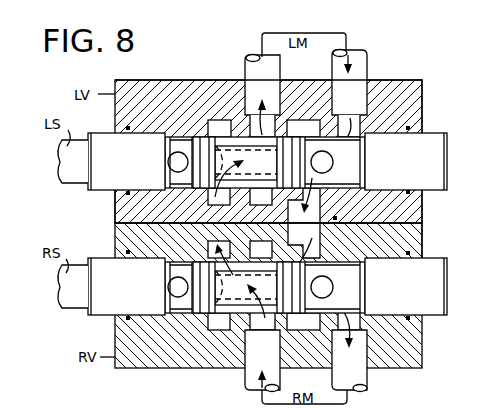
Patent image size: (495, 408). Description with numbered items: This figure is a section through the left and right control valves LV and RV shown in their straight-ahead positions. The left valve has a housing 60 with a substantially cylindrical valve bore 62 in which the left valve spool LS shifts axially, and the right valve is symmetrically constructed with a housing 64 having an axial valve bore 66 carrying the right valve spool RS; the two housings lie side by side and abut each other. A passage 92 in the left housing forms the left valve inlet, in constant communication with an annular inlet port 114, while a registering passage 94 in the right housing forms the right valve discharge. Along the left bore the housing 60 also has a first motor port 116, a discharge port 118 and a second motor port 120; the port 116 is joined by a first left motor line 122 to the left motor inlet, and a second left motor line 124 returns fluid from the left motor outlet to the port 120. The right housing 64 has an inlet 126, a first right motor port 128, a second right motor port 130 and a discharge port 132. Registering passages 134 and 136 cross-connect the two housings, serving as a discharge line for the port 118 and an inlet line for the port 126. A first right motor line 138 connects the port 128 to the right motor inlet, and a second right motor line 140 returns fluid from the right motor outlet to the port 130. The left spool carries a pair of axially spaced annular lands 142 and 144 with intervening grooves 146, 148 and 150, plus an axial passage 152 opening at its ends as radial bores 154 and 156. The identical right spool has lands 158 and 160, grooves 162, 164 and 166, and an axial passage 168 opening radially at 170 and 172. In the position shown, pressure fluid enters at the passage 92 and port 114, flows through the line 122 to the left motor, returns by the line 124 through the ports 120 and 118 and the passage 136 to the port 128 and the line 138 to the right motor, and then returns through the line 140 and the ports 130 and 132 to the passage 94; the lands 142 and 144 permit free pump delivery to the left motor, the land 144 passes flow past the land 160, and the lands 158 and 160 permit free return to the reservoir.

The left valve housing 60 is at (422, 90).
The valve bore 62 is at (420, 128).
The right valve housing 64 is at (422, 368).
The axial valve bore 66 is at (420, 258).
The left valve inlet passage 92 is at (152, 206).
The right valve discharge passage 94 is at (239, 272).
The inlet port 114 is at (215, 120).
The first motor port 116 is at (250, 196).
The discharge port 118 is at (288, 199).
The second motor port 120 is at (366, 112).
The first left motor line 122 is at (245, 68).
The second left motor line 124 is at (367, 70).
The inlet port 126 is at (285, 323).
The first right motor port 128 is at (357, 254).
The second right motor port 130 is at (276, 333).
The discharge port 132 is at (221, 330).
The registering passage 134 is at (330, 212).
The registering passage 136 is at (320, 236).
The first right motor line 138 is at (367, 381).
The second right motor line 140 is at (245, 382).
The annular land 142 is at (200, 133).
The annular land 144 is at (296, 124).
The groove 146 is at (178, 137).
The groove 148 is at (215, 135).
The groove 150 is at (350, 170).
The axial passage 152 is at (258, 178).
The radial bore 154 is at (170, 162).
The radial bore 156 is at (333, 157).
The land 158 is at (198, 313).
The land 160 is at (276, 255).
The groove 162 is at (175, 258).
The groove 164 is at (238, 244).
The groove 166 is at (352, 272).
The axial passage 168 is at (252, 290).
The radial opening 170 is at (170, 287).
The radial opening 172 is at (330, 292).